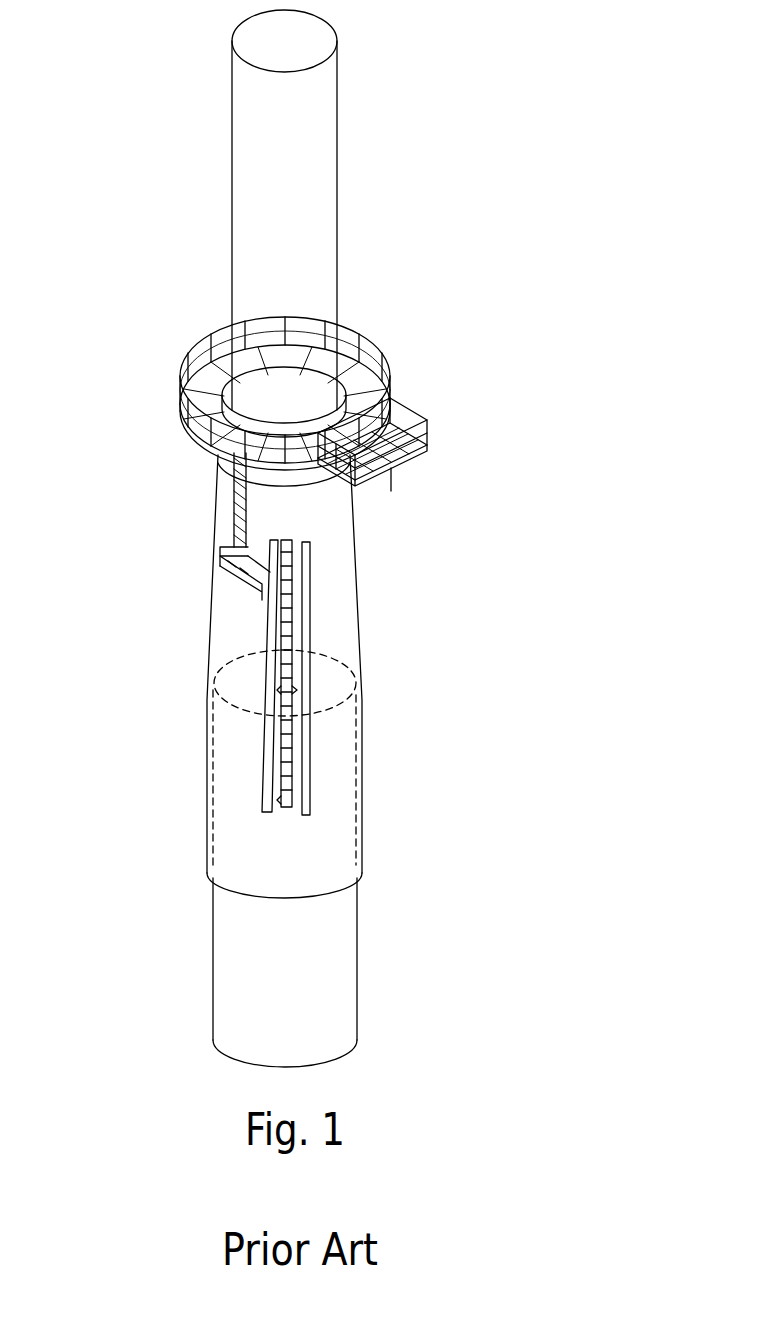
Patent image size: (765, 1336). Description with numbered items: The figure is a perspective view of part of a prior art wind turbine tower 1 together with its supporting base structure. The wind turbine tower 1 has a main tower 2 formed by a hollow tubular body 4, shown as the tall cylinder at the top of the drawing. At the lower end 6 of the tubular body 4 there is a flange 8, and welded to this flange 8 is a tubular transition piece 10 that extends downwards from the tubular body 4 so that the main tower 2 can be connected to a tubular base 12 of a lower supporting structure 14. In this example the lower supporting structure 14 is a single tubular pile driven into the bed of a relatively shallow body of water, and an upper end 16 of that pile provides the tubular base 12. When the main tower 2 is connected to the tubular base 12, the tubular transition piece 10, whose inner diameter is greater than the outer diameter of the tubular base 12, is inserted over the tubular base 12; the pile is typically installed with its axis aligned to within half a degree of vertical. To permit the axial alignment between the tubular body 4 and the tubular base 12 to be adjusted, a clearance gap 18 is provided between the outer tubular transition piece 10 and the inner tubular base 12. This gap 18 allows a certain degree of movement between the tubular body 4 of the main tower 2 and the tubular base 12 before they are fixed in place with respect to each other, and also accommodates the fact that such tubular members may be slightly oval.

The wind turbine tower 1 is at (508, 225).
The main tower 2 is at (226, 176).
The hollow tubular body 4 is at (240, 271).
The lower end 6 is at (214, 453).
The flange 8 is at (217, 470).
The tubular transition piece 10 is at (222, 632).
The tubular base 12 is at (222, 943).
The lower supporting structure 14 is at (212, 1005).
The upper end 16 is at (256, 752).
The clearance gap 18 is at (207, 833).